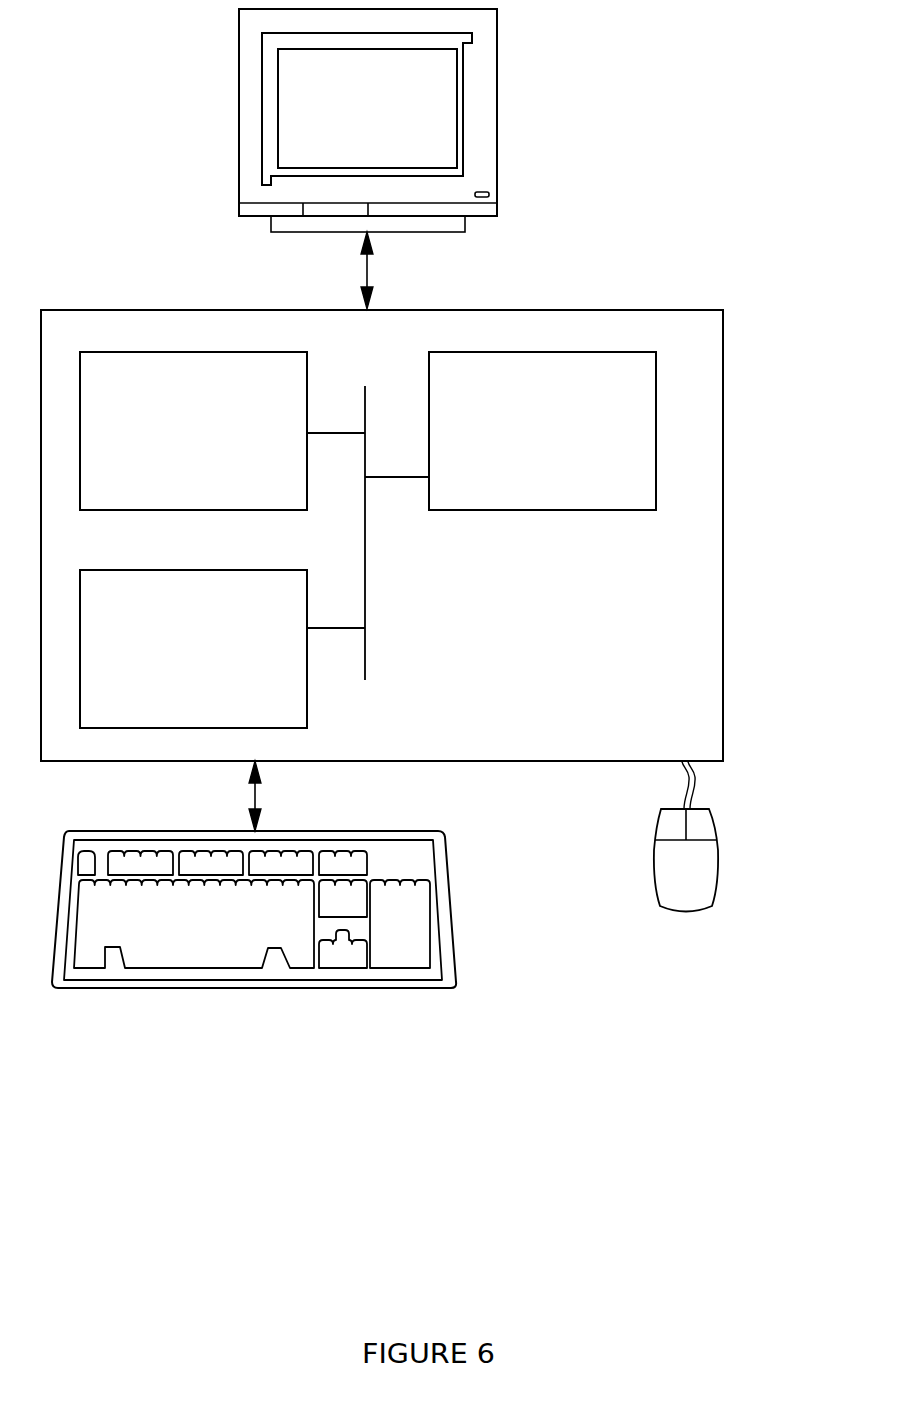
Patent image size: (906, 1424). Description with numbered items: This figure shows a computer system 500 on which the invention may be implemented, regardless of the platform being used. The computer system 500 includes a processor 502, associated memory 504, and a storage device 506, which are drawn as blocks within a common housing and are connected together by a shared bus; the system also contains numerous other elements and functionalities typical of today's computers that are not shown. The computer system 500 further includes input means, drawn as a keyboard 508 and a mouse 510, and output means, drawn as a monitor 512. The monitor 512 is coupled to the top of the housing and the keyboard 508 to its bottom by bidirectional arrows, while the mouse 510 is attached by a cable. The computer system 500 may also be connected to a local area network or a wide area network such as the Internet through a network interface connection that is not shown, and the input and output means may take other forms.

The computer system 500 is at (697, 182).
The processor 502 is at (581, 441).
The memory 504 is at (215, 441).
The storage device 506 is at (211, 661).
The keyboard 508 is at (206, 947).
The mouse 510 is at (707, 882).
The monitor 512 is at (388, 124).